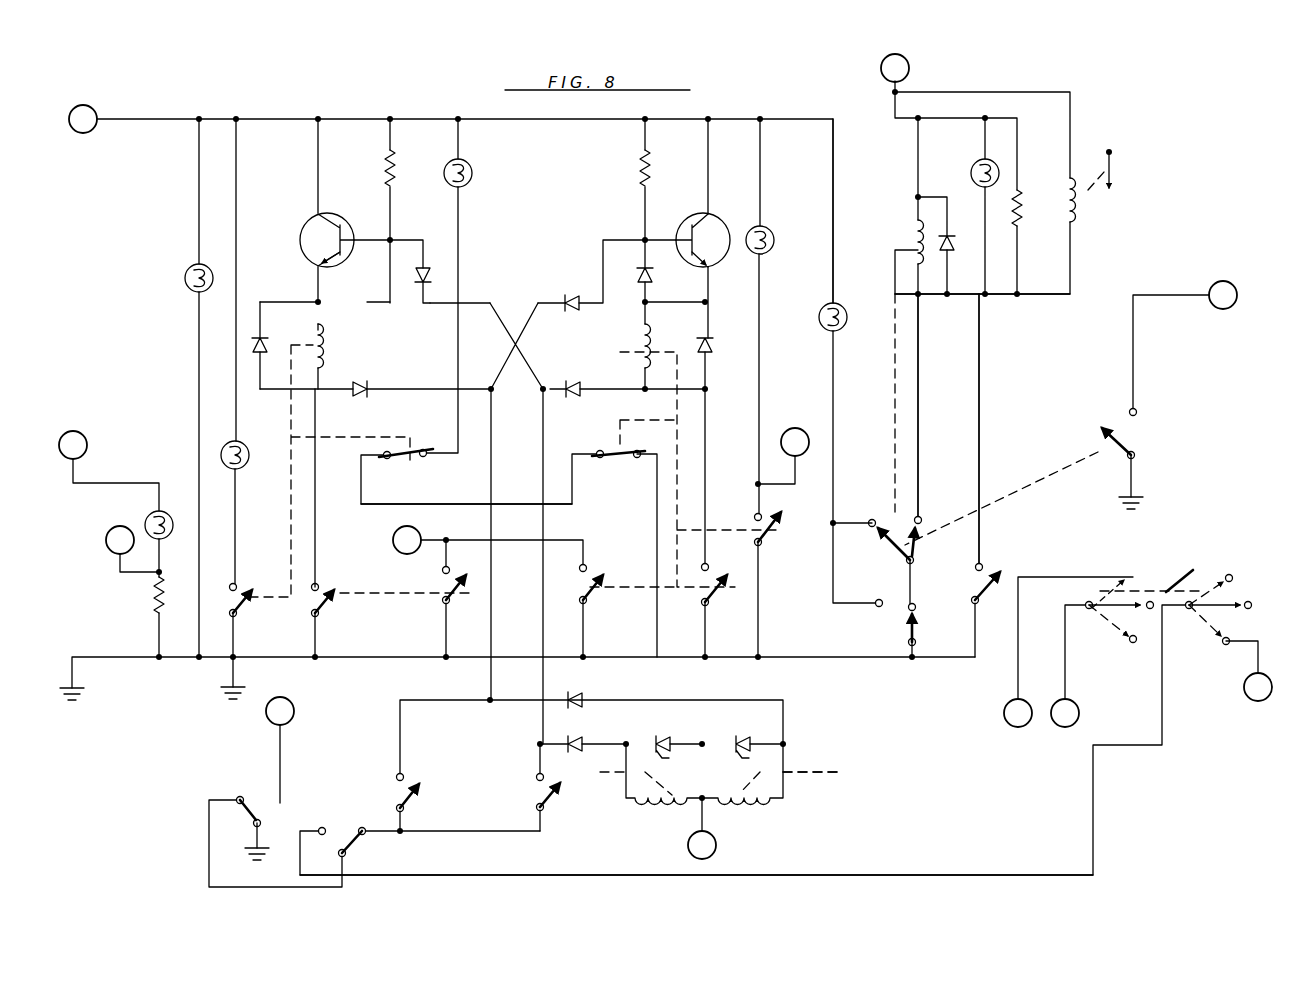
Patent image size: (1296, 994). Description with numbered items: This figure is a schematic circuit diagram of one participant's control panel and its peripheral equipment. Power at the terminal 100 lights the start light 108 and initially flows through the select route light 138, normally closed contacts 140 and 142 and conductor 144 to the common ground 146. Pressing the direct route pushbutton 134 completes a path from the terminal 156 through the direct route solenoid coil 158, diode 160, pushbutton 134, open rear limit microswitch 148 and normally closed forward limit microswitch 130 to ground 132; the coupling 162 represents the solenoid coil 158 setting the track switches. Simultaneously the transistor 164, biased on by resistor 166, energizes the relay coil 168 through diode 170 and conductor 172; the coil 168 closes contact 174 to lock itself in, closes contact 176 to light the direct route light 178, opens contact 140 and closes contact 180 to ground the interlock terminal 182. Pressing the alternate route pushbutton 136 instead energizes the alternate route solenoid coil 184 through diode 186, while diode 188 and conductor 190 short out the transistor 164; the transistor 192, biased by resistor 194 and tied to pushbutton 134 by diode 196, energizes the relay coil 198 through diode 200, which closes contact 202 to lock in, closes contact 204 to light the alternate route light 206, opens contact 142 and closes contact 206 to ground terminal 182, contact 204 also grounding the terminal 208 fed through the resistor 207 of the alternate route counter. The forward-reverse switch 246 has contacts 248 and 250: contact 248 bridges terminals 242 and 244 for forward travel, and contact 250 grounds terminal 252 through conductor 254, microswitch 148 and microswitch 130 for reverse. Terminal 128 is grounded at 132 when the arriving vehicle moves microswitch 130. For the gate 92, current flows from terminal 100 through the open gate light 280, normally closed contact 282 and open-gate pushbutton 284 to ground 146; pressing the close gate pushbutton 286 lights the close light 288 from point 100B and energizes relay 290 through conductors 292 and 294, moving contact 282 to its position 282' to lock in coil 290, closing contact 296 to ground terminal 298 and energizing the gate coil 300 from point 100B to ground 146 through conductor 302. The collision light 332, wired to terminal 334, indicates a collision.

The terminal 100 is at (107, 95).
The terminal point 100B is at (909, 68).
The start light 108 is at (185, 284).
The transistor 164 is at (300, 233).
The resistor 166 is at (384, 172).
The diode 188 is at (426, 264).
The relay coil 168 is at (332, 351).
The diode 170 is at (362, 397).
The direct route light 178 is at (249, 455).
The normally open contact 176 is at (238, 617).
The normally open contact 174 is at (320, 617).
The normally open contact 180 is at (447, 605).
The terminal point 182 is at (392, 545).
The conductor 190 is at (540, 623).
The conductor 172 is at (491, 480).
The normally closed contact 140 is at (414, 461).
The normally closed contact 142 is at (602, 461).
The conductor 144 is at (655, 527).
The diode 200 is at (575, 384).
The relay coil 198 is at (624, 345).
The diode 196 is at (572, 296).
The resistor 194 is at (638, 176).
The transistor 192 is at (722, 220).
The alternate route light 206 is at (776, 249).
The open gate light 280 is at (818, 320).
The terminal 208 is at (798, 428).
The resistor 207 is at (756, 484).
The normally open contact 204 is at (764, 532).
The normally open contact 202 is at (710, 606).
The select route light 138 is at (477, 177).
The gate coil 300 is at (78, 430).
The collision light 332 is at (150, 512).
The terminal 334 is at (106, 546).
The common ground 146 is at (86, 698).
The terminal 128 is at (296, 711).
The forward limit microswitch 130 is at (251, 808).
The ground 132 is at (241, 860).
The rear limit microswitch 148 is at (352, 846).
The direct route pushbutton 134 is at (408, 806).
The alternate route pushbutton 136 is at (527, 808).
The diode 160 is at (585, 697).
The diode 186 is at (582, 740).
The alternate route solenoid coil 184 is at (640, 806).
The direct route solenoid coil 158 is at (742, 806).
The mechanical coupling 162 is at (822, 769).
The terminal 156 is at (716, 845).
The conductor 254 is at (988, 862).
The terminal 242 is at (1006, 707).
The terminal 244 is at (1079, 707).
The contact 248 is at (1098, 618).
The forward-reverse switch 246 is at (1173, 588).
The contact 250 is at (1220, 598).
The terminal 252 is at (1250, 700).
The terminal 298 is at (1238, 280).
The normally open contact 296 is at (1120, 441).
The conductor 294 is at (985, 371).
The conductor 302 is at (920, 413).
The conductor 292 is at (965, 300).
The relay 290 is at (908, 232).
The close light 288 is at (971, 174).
The gate 92 is at (1116, 176).
The normally closed contact 282 is at (872, 553).
The contact position 282' is at (936, 539).
The open-gate pushbutton 284 is at (906, 630).
The close gate pushbutton 286 is at (998, 581).